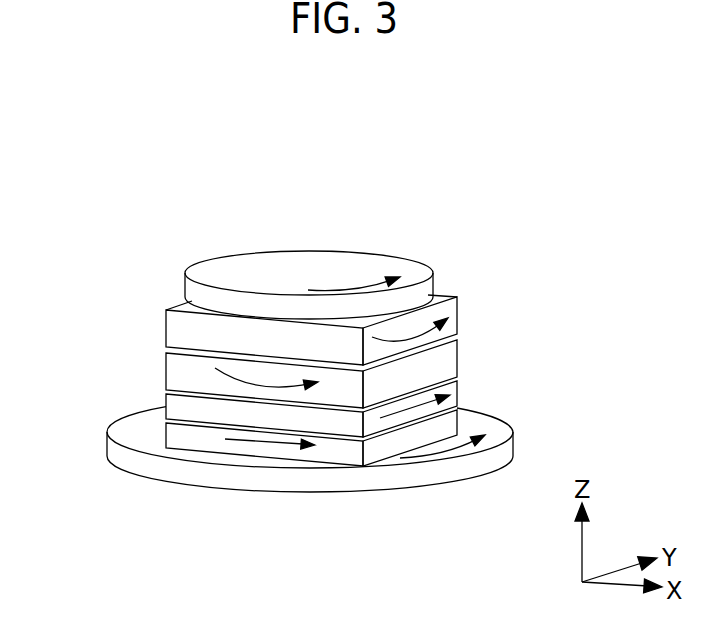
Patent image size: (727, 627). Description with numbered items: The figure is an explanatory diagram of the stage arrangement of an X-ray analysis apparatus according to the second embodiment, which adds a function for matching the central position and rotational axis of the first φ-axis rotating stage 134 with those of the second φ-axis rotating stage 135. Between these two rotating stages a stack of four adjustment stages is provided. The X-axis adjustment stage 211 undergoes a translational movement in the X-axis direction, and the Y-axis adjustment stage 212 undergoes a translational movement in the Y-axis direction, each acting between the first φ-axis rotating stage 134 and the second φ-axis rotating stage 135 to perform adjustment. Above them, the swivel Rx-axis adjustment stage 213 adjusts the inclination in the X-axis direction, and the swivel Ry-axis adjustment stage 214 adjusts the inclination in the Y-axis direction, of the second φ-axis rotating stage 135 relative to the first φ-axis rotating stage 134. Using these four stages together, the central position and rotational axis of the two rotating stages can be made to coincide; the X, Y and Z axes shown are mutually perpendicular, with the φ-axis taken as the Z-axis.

The first φ-axis rotating stage 134 is at (112, 452).
The second φ-axis rotating stage 135 is at (192, 293).
The X-axis adjustment stage 211 is at (458, 418).
The Y-axis adjustment stage 212 is at (458, 390).
The swivel Rx-axis adjustment stage 213 is at (458, 353).
The swivel Ry-axis adjustment stage 214 is at (458, 318).